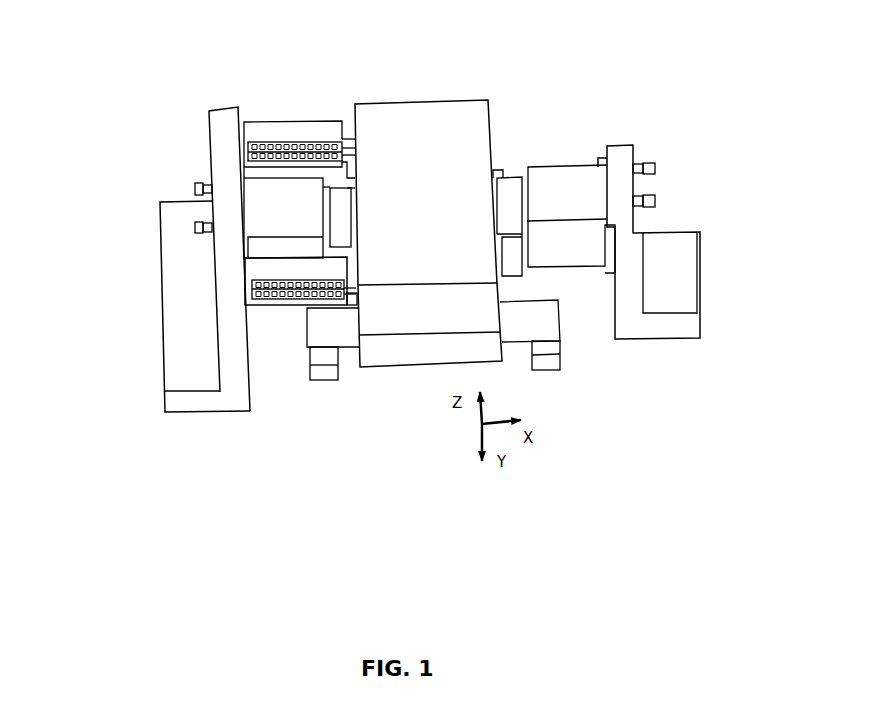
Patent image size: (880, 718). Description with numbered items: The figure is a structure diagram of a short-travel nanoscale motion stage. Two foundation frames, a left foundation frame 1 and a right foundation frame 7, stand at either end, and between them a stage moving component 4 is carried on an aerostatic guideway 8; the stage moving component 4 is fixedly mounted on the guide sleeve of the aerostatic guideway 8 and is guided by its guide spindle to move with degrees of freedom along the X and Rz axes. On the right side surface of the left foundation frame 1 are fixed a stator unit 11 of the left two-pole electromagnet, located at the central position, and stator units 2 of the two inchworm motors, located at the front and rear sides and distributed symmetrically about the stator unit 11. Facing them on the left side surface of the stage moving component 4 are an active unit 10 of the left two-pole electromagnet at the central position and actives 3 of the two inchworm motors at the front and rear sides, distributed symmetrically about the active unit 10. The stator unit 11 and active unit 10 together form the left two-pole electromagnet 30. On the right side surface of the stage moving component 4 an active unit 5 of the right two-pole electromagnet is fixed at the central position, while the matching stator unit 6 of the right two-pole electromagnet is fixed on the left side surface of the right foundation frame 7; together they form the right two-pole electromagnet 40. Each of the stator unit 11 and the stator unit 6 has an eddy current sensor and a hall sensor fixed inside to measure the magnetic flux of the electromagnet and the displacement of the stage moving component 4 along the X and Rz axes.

The left foundation frame 1 is at (212, 213).
The stator unit of inchworm motor 2 is at (293, 97).
The active of inchworm motor 3 is at (337, 102).
The stage moving component 4 is at (426, 150).
The active unit of right two-pole electromagnet 5 is at (533, 125).
The stator unit of right two-pole electromagnet 6 is at (584, 118).
The right foundation frame 7 is at (687, 195).
The aerostatic guideway 8 is at (404, 385).
The active unit of left two-pole electromagnet 10 is at (197, 290).
The stator unit of left two-pole electromagnet 11 is at (183, 295).
The left two-pole electromagnet 30 is at (214, 193).
The right two-pole electromagnet 40 is at (629, 317).